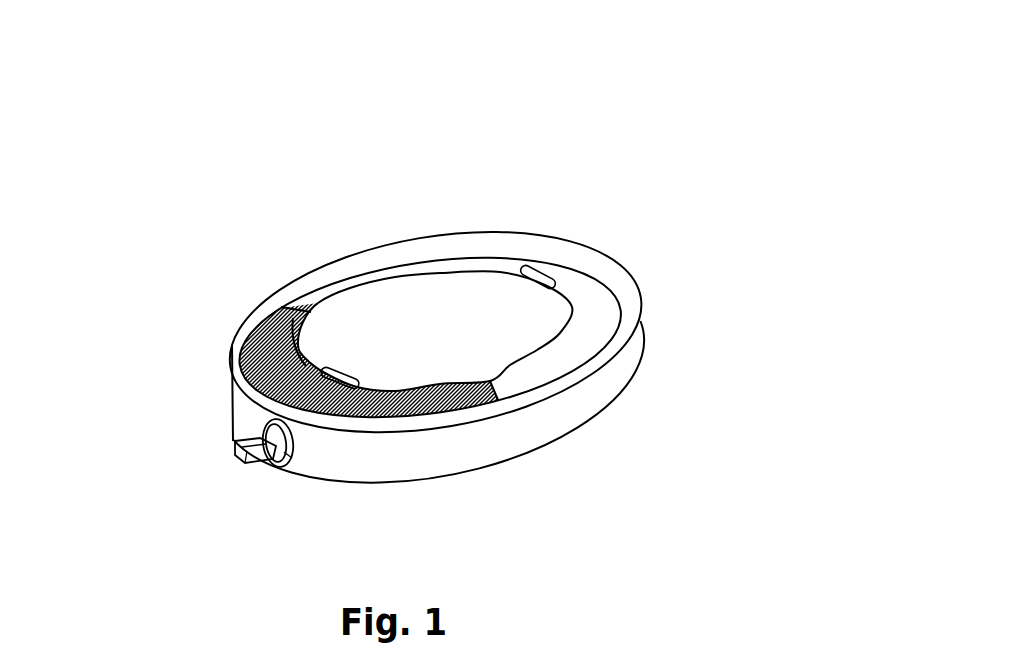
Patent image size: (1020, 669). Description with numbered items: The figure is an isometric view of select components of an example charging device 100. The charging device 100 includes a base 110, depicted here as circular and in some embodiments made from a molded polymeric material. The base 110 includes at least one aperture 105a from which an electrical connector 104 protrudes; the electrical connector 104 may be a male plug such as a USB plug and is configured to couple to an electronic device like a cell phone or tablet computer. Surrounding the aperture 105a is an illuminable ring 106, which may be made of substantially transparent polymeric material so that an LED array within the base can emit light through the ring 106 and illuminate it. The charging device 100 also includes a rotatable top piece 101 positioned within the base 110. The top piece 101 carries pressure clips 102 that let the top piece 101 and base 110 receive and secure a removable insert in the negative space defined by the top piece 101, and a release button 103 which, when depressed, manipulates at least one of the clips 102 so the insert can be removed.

The charging device 100 is at (412, 288).
The rotatable top piece 101 is at (330, 285).
The pressure clips 102 is at (333, 368).
The release button 103 is at (233, 340).
The electrical connector 104 is at (242, 451).
The aperture 105a is at (272, 430).
The illuminable ring 106 is at (287, 447).
The base 110 is at (595, 425).